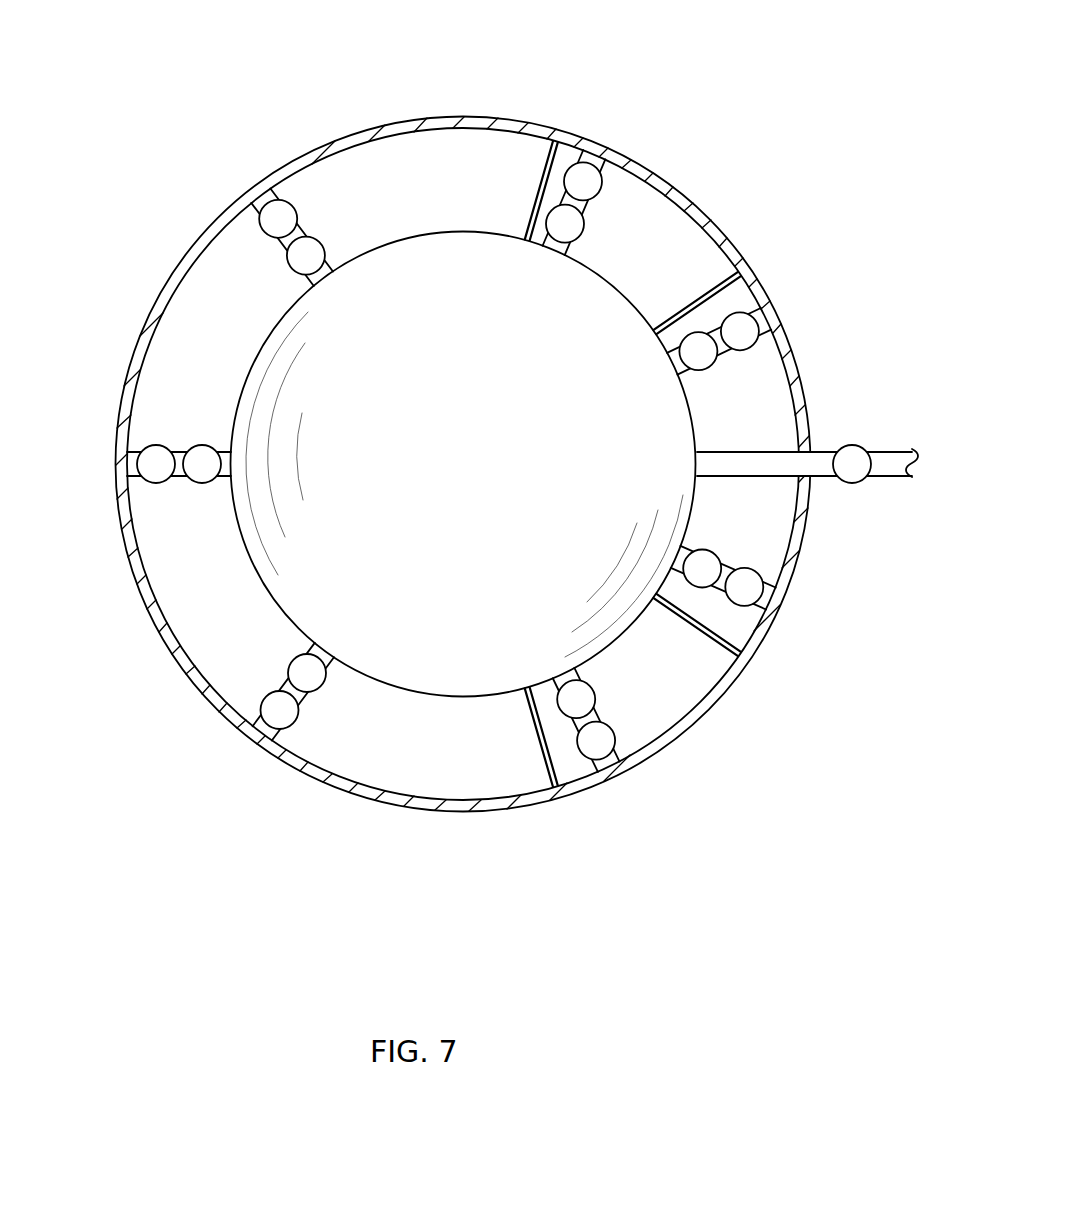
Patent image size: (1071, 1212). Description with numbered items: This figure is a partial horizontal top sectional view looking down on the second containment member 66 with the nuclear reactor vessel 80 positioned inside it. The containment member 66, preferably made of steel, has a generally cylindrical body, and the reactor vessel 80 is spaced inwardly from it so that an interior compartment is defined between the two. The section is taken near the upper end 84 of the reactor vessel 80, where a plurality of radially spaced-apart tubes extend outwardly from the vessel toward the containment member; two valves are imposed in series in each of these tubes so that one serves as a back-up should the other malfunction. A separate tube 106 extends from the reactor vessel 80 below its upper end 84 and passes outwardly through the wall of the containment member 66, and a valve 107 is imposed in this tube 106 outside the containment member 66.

The second containment member 66 is at (718, 217).
The nuclear reactor vessel 80 is at (700, 421).
The upper end 84 is at (458, 469).
The tube 106 is at (811, 461).
The outlet valve 107 is at (856, 483).